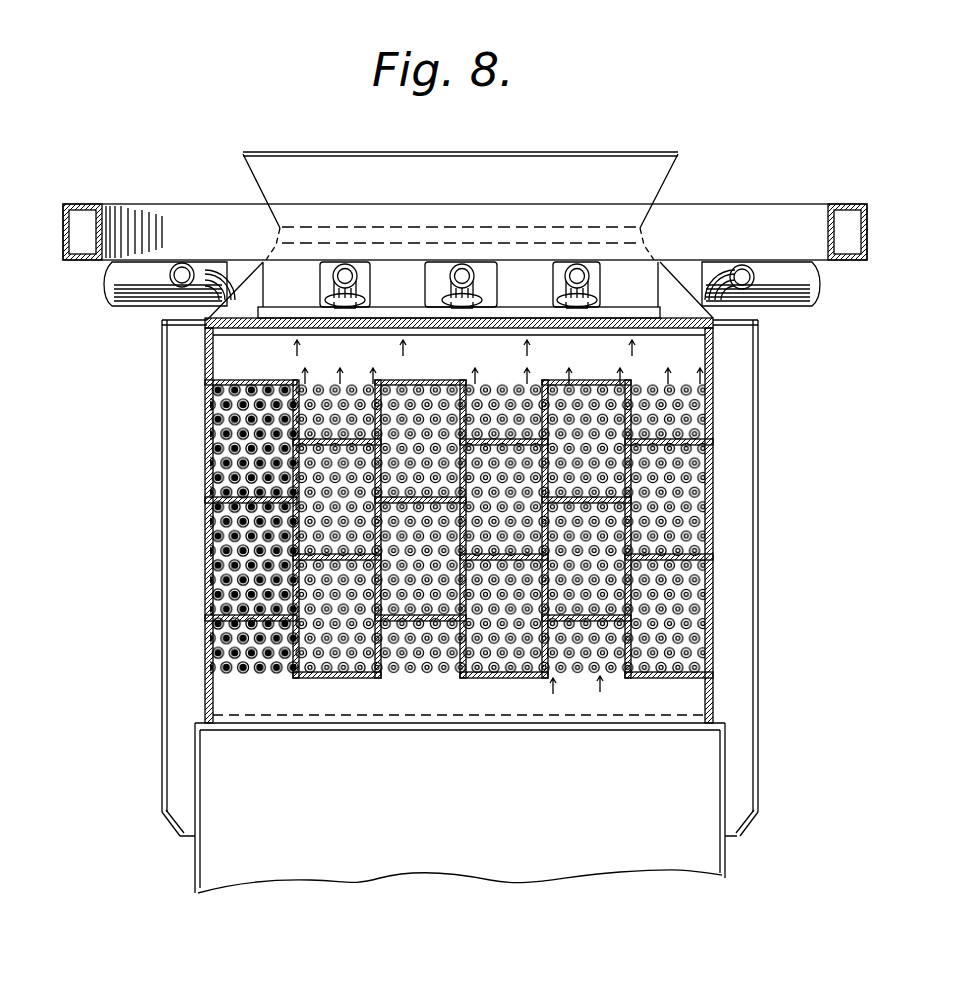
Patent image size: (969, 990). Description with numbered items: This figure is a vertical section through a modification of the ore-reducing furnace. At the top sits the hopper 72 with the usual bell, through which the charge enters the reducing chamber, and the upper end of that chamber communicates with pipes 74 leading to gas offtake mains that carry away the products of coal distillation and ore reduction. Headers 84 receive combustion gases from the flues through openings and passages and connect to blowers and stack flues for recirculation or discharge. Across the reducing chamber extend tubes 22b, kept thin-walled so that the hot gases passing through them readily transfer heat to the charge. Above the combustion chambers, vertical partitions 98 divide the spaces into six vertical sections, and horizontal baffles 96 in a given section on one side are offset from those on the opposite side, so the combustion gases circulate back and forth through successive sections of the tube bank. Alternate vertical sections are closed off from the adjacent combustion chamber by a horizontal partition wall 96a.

The hopper 72 is at (455, 155).
The headers 84 is at (465, 232).
The pipes 74 is at (228, 264).
The tubes 22b is at (717, 502).
The horizontal baffles 96 is at (693, 437).
The horizontal partition wall 96a is at (347, 675).
The vertical partitions 98 is at (293, 553).